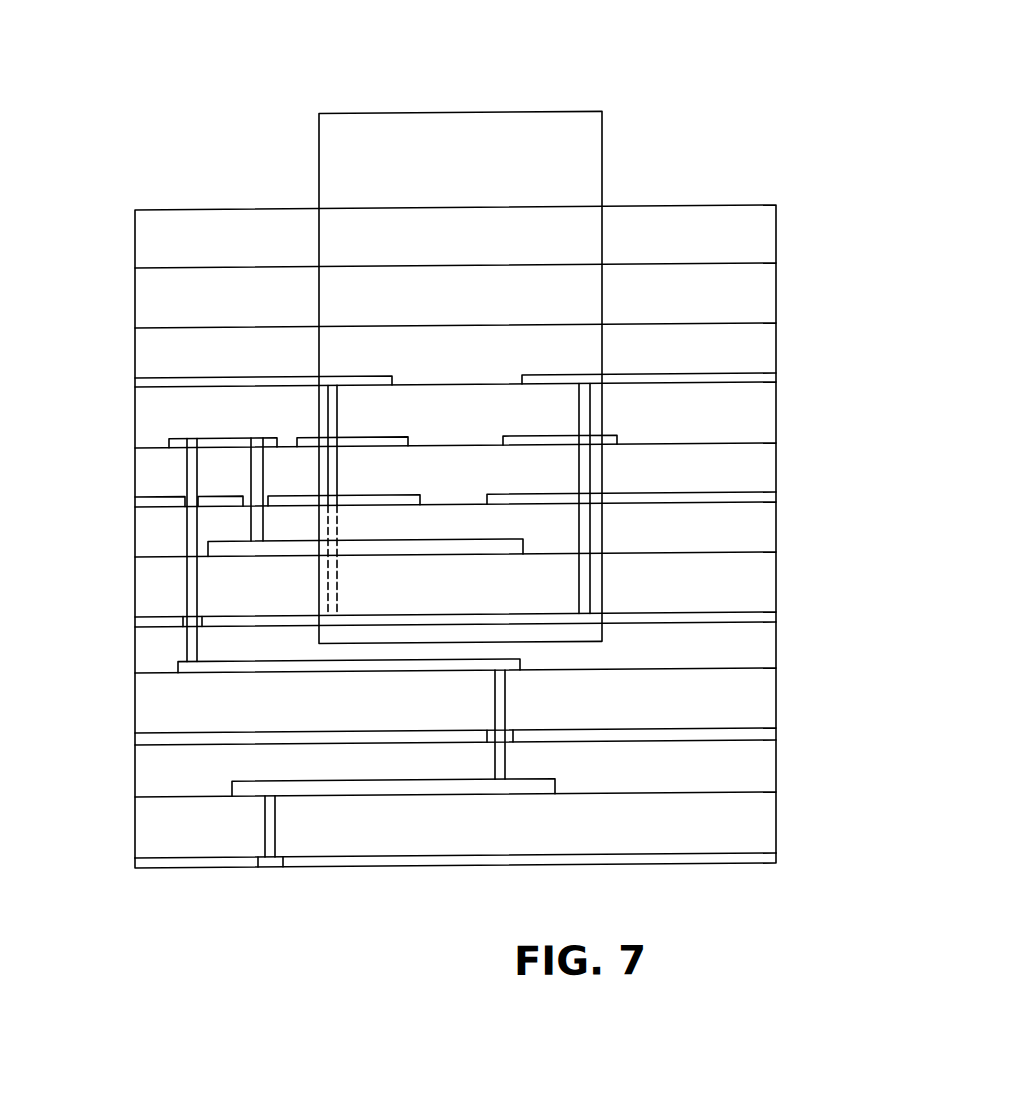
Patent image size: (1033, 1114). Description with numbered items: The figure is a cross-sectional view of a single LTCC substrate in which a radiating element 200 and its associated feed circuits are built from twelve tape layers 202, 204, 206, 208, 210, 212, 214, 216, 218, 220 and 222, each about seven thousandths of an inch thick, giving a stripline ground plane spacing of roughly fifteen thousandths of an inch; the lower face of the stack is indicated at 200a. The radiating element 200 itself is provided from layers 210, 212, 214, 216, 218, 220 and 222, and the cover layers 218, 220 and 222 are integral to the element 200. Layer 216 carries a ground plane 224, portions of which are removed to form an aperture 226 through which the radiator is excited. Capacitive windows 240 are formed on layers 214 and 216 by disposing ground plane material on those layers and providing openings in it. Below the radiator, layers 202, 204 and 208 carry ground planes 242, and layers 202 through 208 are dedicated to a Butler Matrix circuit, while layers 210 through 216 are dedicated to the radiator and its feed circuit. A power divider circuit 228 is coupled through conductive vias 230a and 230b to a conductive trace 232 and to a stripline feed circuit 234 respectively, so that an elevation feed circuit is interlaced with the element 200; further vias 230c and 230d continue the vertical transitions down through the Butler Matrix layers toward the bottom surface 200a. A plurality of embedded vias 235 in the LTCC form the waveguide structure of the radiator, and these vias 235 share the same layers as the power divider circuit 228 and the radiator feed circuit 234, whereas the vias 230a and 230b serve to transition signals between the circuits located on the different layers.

The radiating element 200 is at (519, 115).
The bottom surface of package 200a is at (280, 869).
The LTCC layer 202 is at (777, 826).
The LTCC layer 204 is at (777, 766).
The LTCC layer 206 is at (777, 703).
The LTCC layer 208 is at (777, 648).
The LTCC layer 210 is at (777, 605).
The LTCC layer 212 is at (777, 543).
The LTCC layer 214 is at (777, 473).
The LTCC layer 216 is at (777, 426).
The cover layer 218 is at (777, 338).
The cover layer 220 is at (777, 288).
The cover layer 222 is at (777, 238).
The ground plane 224 is at (291, 377).
The aperture 226 is at (415, 372).
The power divider circuit 228 is at (215, 432).
The conductive via 230a is at (192, 478).
The conductive via 230b is at (255, 523).
The via 230c is at (508, 710).
The via 230d is at (277, 837).
The conductive trace 232 is at (248, 671).
The stripline feed circuit 234 is at (500, 536).
The embedded vias 235 is at (333, 413).
The capacitive windows 240 is at (435, 504).
The ground planes 242 is at (777, 506).